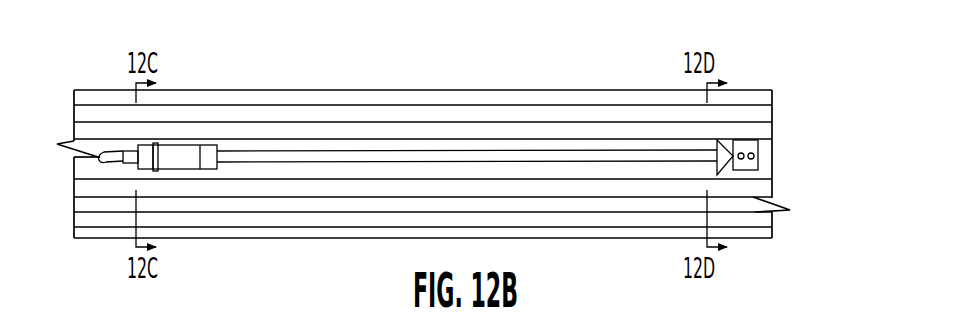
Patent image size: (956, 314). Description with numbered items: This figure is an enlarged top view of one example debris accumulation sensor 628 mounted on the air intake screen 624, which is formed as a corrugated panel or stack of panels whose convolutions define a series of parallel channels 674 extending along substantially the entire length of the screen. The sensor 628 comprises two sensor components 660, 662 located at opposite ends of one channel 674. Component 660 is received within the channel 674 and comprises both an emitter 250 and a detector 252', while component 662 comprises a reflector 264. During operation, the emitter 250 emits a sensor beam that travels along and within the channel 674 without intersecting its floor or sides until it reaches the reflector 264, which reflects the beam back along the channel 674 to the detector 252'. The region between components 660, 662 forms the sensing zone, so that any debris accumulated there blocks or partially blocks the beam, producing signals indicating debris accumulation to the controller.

The sensor component 660 is at (196, 166).
The channel 674 is at (468, 155).
The sensor component 662 is at (719, 141).
The debris accumulation sensor 628 is at (764, 139).
The air intake screen 624 is at (721, 172).
The reflector 264 is at (772, 215).
The emitter 250 is at (196, 213).
The detector 252' is at (196, 217).